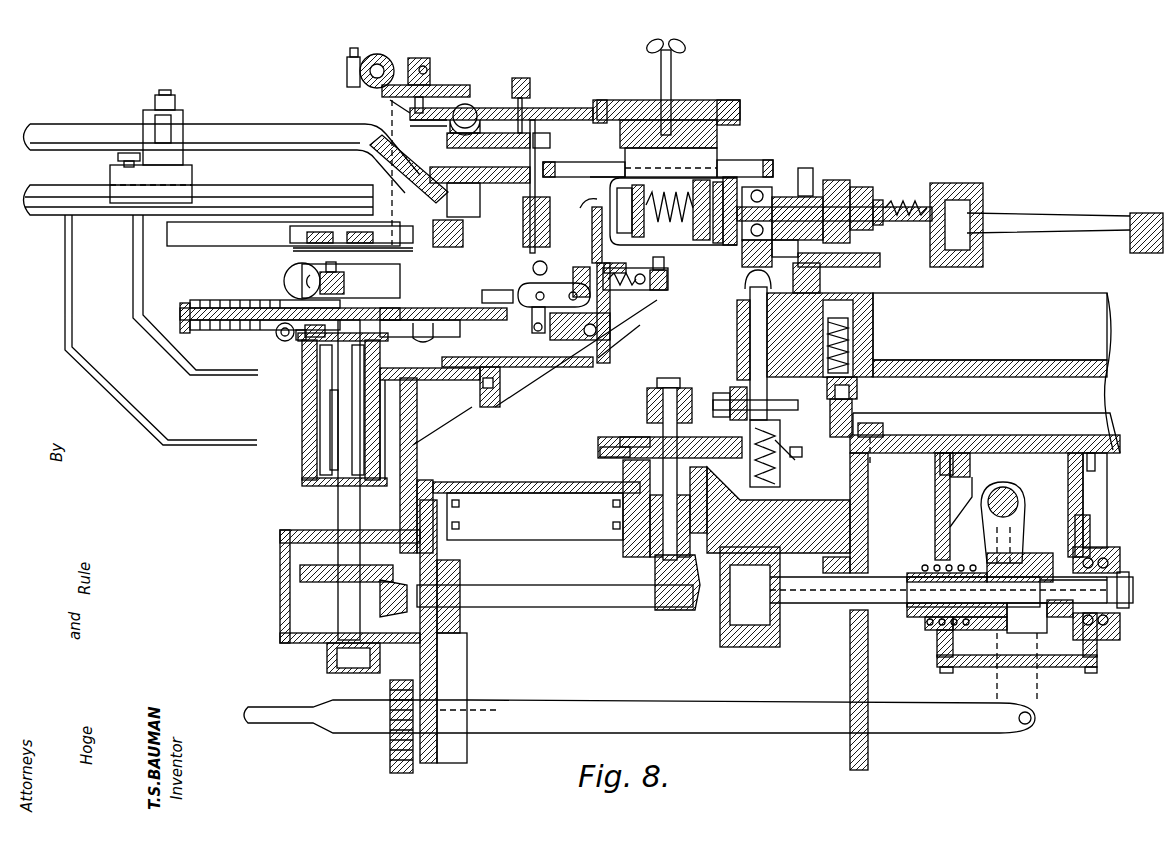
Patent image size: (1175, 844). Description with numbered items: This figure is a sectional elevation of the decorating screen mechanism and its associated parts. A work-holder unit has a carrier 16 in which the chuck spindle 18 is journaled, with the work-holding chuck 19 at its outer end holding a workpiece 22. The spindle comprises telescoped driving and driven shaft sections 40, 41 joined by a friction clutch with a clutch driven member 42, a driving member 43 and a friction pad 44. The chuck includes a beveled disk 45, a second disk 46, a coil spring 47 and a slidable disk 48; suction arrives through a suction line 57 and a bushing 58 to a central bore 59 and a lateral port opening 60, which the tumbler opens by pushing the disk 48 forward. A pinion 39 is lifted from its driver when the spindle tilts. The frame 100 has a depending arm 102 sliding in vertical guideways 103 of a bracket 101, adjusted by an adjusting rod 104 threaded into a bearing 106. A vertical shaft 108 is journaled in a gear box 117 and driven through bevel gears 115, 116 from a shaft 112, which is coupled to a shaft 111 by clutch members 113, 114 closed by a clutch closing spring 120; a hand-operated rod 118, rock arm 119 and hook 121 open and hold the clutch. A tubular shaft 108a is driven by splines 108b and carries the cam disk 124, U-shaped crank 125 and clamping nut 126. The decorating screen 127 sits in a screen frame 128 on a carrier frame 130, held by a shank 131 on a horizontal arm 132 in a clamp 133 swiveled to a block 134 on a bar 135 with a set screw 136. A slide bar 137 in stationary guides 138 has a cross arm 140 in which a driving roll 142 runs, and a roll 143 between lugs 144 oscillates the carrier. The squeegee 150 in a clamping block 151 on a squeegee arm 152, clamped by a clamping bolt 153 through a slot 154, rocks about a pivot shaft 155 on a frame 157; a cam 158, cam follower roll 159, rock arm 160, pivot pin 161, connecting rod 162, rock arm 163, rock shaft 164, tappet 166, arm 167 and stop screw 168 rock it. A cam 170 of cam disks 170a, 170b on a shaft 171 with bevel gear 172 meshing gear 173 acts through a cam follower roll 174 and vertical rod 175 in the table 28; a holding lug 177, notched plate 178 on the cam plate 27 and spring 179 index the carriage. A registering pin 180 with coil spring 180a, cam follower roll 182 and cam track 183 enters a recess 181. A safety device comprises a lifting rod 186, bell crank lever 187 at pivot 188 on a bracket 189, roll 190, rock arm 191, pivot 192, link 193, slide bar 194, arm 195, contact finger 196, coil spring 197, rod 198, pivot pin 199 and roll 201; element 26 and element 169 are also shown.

The carrier 16 is at (945, 265).
The chuck spindle 18 is at (1060, 218).
The work-holding chuck 19 is at (725, 160).
The workpiece 22 is at (671, 162).
The column 26 is at (868, 510).
The stationary cam plate 27 is at (1028, 434).
The table 28 is at (1085, 355).
The pinion 39 is at (1155, 215).
The driving shaft section 40 is at (680, 190).
The driven shaft section 41 is at (985, 220).
The clutch driven member 42 is at (845, 178).
The clutch driving member 43 is at (870, 195).
The friction pad 44 is at (862, 186).
The disk 45 is at (730, 245).
The second disk 46 is at (714, 243).
The coil spring 47 is at (700, 238).
The slidable disk 48 is at (636, 230).
The suction line 57 is at (804, 168).
The bushing 58 is at (808, 197).
The central bore 59 is at (765, 198).
The lateral port opening 60 is at (607, 170).
The frame 100 is at (158, 428).
The bracket 101 is at (458, 655).
The depending arm 102 is at (418, 463).
The vertical guideways 103 is at (386, 668).
The adjusting rod 104 is at (390, 760).
The bearing 106 is at (390, 738).
The vertical shaft 108 is at (338, 490).
The tubular shaft 108a is at (332, 468).
The splines 108b is at (322, 450).
The shaft 111 is at (1122, 588).
The shaft 112 is at (838, 598).
The clutch member 113 is at (1040, 555).
The clutch member 114 is at (1023, 552).
The bevel gear 115 is at (393, 610).
The bevel gear 116 is at (306, 584).
The gear box 117 is at (283, 600).
The hand-operated rod 118 is at (688, 703).
The rock arm 119 is at (1005, 676).
The clutch closing spring 120 is at (972, 622).
The hook 121 is at (460, 716).
The cam disk 124 is at (250, 303).
The U-shaped crank 125 is at (285, 279).
The clamping nut 126 is at (345, 283).
The decorating screen 127 is at (765, 160).
The screen frame 128 is at (590, 162).
The carrier frame 130 is at (552, 162).
The shank 131 is at (392, 157).
The horizontal arm 132 is at (258, 128).
The clamp 133 is at (183, 112).
The block 134 is at (193, 173).
The bar 135 is at (312, 186).
The set screw 136 is at (118, 158).
The slide bar 137 is at (292, 238).
The stationary guides 138 is at (293, 249).
The cross arm 140 is at (200, 235).
The driving roll 142 is at (463, 232).
The roll 143 is at (470, 172).
The lugs 144 is at (480, 208).
The squeegee 150 is at (740, 120).
The clamping block 151 is at (715, 120).
The squeegee arm 152 is at (560, 108).
The clamping bolt 153 is at (675, 95).
The slot 154 is at (625, 100).
The pivot shaft 155 is at (490, 100).
The frame 157 is at (478, 110).
The cam 158 is at (274, 334).
The cam follower roll 159 is at (310, 340).
The rock arm 160 is at (405, 330).
The pivot pin 161 is at (290, 338).
The connecting rod 162 is at (390, 112).
The rock arm 163 is at (420, 58).
The rock shaft 164 is at (370, 55).
The tappet 166 is at (385, 60).
The arm 167 is at (440, 85).
The stop screw 168 is at (428, 68).
The rod 169 is at (530, 85).
The cam 170 is at (640, 435).
The cam disk 170a is at (625, 437).
The cam disk 170b is at (600, 447).
The shaft 171 is at (680, 388).
The bevel gear 172 is at (655, 570).
The gear 173 is at (696, 610).
The cam follower roll 174 is at (727, 393).
The vertical rod 175 is at (750, 343).
The holding lug 177 is at (785, 460).
The notched plate 178 is at (800, 455).
The spring 179 is at (752, 460).
The registering pin 180 is at (856, 318).
The coil spring 180a is at (856, 337).
The recess 181 is at (860, 280).
The cam follower roll 182 is at (850, 390).
The cam track 183 is at (852, 410).
The lifting rod 186 is at (540, 200).
The bell crank lever 187 is at (612, 325).
The pivot 188 is at (615, 340).
The bracket 189 is at (580, 366).
The roll 190 is at (500, 290).
The rock arm 191 is at (533, 325).
The pivot 192 is at (550, 338).
The link 193 is at (548, 283).
The slide bar 194 is at (580, 266).
The arm 195 is at (592, 240).
The contact finger 196 is at (592, 203).
The coil spring 197 is at (620, 290).
The rod 198 is at (612, 266).
The pivot pin 199 is at (655, 290).
The roll 201 is at (535, 264).